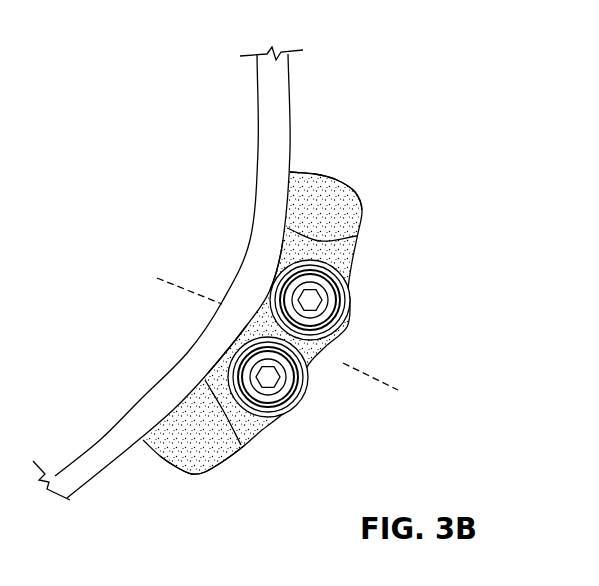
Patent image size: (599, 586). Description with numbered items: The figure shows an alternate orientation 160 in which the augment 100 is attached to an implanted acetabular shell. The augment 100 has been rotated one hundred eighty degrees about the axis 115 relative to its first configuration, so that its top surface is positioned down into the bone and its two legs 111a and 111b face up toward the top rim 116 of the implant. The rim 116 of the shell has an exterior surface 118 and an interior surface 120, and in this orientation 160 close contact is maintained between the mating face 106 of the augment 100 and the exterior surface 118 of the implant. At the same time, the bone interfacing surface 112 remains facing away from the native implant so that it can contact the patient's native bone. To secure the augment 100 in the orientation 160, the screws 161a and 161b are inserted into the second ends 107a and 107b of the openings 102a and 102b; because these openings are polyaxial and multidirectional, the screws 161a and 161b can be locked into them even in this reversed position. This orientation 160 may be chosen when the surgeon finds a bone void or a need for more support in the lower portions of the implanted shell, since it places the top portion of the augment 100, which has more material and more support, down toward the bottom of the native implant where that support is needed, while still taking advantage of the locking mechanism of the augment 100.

The orientation 160 is at (161, 31).
The augment 100 is at (303, 323).
The leg 111a is at (314, 197).
The leg 111b is at (201, 462).
The bone interfacing surface 112 is at (365, 222).
The second end 107a is at (293, 267).
The second end 107b is at (243, 330).
The screw 161a is at (318, 299).
The screw 161b is at (272, 380).
The opening 102a is at (375, 305).
The opening 102b is at (323, 405).
The axis 115 is at (365, 370).
The mating face 106 is at (162, 296).
The interior surface 120 is at (140, 402).
The exterior surface 118 is at (128, 447).
The rim 116 is at (110, 459).